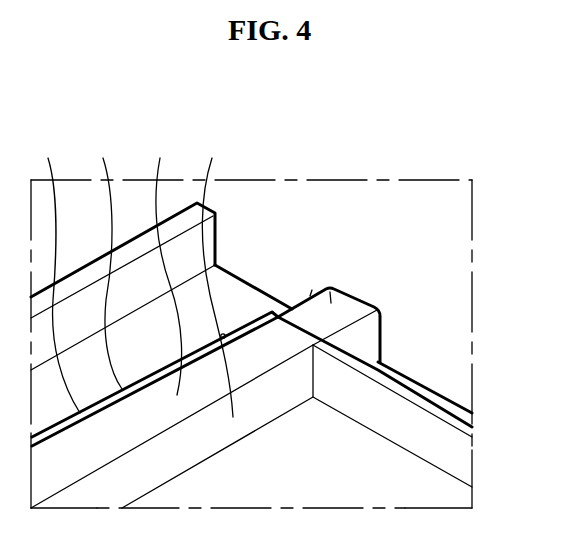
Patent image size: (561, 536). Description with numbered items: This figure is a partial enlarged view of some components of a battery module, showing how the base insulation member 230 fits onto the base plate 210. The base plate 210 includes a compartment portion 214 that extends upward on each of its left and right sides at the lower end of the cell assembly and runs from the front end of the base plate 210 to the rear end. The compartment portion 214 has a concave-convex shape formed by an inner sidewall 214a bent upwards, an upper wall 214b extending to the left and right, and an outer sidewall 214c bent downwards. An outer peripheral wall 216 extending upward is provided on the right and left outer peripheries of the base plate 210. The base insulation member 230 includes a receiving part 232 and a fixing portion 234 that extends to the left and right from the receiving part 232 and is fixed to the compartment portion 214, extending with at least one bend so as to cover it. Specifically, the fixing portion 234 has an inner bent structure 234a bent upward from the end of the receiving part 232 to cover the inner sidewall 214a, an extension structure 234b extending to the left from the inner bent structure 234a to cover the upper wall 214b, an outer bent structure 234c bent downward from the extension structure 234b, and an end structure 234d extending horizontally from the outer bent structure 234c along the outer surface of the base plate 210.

The base plate 210 is at (252, 286).
The compartment portion 214 is at (360, 289).
The inner sidewall 214a is at (364, 339).
The upper wall 214b is at (331, 303).
The outer sidewall 214c is at (310, 296).
The outer peripheral wall 216 is at (215, 209).
The base insulation member 230 is at (408, 379).
The receiving part 232 is at (383, 482).
The fixing portion 234 is at (131, 254).
The inner bent structure 234a is at (218, 276).
The extension structure 234b is at (163, 265).
The outer bent structure 234c is at (106, 262).
The end structure 234d is at (52, 274).